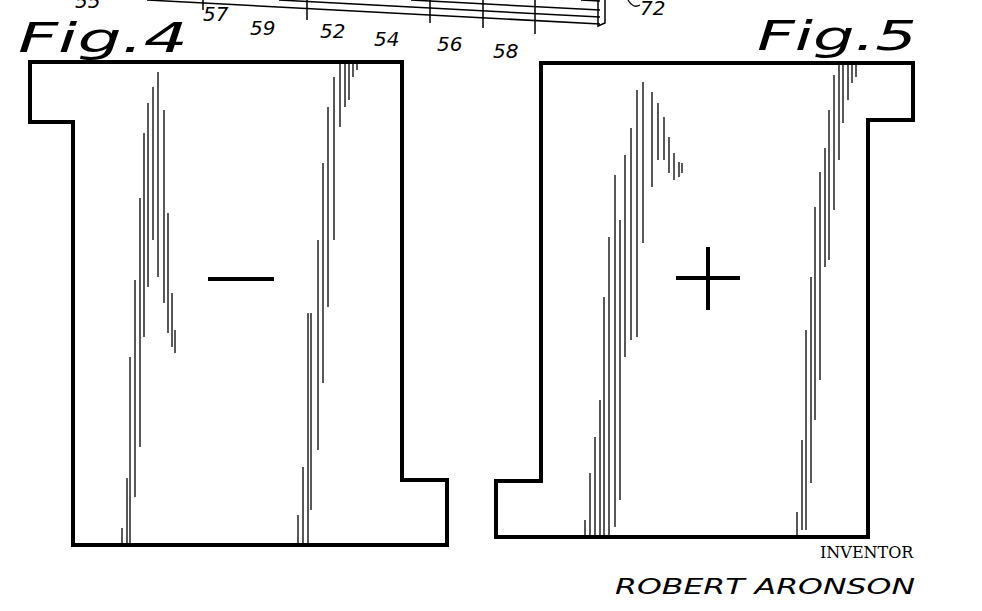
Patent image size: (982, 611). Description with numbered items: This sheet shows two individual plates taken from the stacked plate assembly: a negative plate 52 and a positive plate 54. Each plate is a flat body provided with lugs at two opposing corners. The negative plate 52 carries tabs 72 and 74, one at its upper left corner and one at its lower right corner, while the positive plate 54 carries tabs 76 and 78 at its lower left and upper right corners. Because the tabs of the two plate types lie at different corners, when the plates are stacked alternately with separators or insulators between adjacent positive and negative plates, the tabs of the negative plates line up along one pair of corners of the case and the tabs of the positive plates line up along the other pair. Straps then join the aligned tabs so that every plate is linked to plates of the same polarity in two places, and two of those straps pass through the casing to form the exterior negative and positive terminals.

In FIG. 4, the negative plate 52 is at (233, 524).
In FIG. 5, the positive plate 54 is at (565, 279).
In FIG. 4, the tab 72 is at (428, 527).
In FIG. 4, the tab 74 is at (50, 108).
In FIG. 5, the tab 76 is at (513, 492).
In FIG. 5, the tab 78 is at (899, 105).